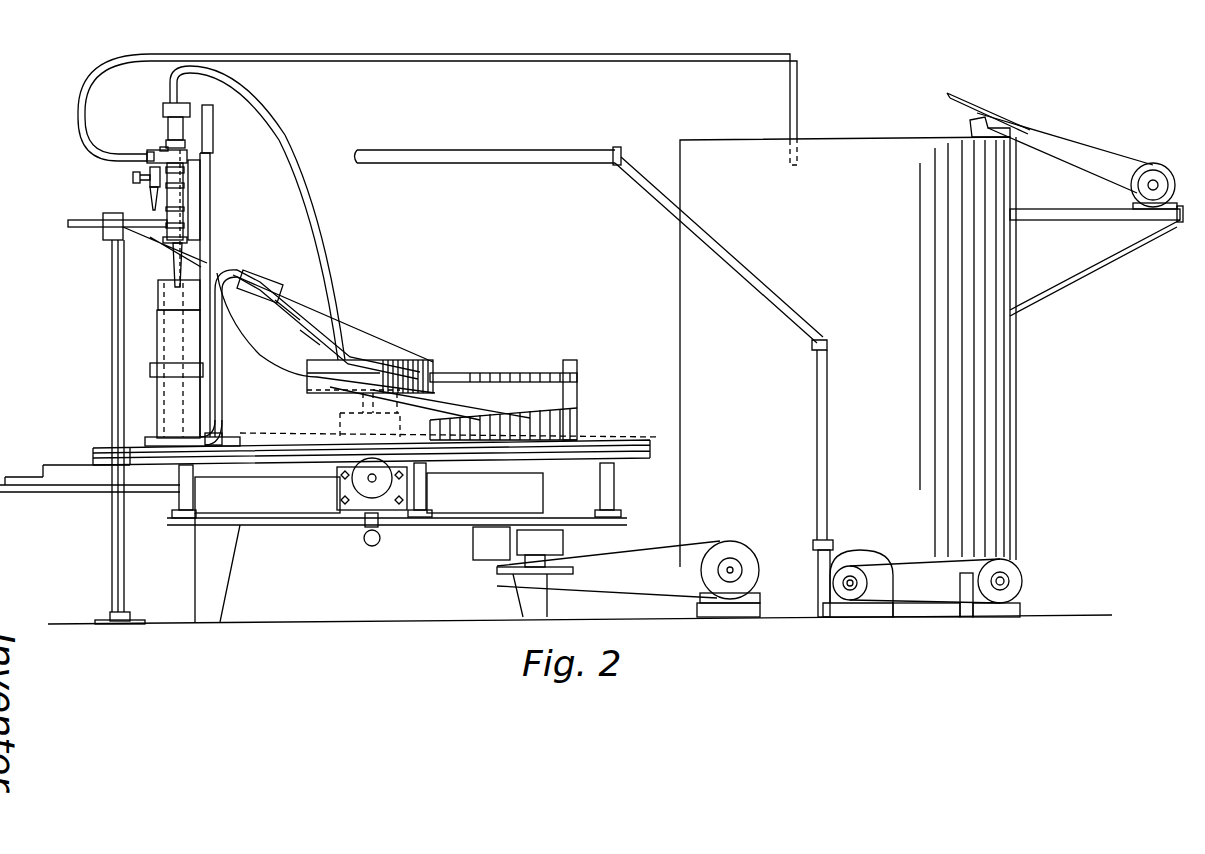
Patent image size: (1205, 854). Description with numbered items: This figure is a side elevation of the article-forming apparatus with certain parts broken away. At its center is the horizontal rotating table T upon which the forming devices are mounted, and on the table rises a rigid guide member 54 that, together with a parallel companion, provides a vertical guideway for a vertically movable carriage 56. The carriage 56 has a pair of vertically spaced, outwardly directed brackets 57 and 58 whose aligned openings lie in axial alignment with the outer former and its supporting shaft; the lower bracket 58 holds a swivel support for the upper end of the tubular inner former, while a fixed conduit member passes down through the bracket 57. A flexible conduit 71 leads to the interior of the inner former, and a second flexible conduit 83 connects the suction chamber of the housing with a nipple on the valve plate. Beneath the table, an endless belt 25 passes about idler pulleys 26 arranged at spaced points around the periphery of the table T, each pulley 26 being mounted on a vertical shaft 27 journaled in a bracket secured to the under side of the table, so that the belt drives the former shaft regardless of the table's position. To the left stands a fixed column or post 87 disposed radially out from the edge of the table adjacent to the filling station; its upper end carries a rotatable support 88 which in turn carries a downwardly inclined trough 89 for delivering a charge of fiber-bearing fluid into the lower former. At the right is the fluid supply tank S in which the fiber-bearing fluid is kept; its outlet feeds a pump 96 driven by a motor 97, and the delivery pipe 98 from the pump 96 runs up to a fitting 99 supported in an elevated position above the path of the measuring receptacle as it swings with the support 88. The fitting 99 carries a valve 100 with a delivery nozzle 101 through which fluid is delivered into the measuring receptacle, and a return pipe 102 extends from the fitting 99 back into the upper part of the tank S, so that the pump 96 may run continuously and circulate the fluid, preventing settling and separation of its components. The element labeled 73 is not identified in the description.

The return pipe 102 is at (80, 100).
The carriage 56 is at (213, 108).
The flexible conduit 71 is at (278, 140).
The bracket 57 is at (165, 104).
The fitting 99 is at (153, 150).
The bracket 58 is at (183, 155).
The valve 100 is at (133, 178).
The delivery nozzle 101 is at (149, 195).
The guide member 54 is at (215, 218).
The rotatable support 88 is at (93, 226).
The trough 89 is at (150, 234).
The post 87 is at (112, 582).
The flexible conduit 83 is at (300, 283).
The plate 73 is at (313, 367).
The rotating table T is at (626, 433).
The vertical shaft 27 is at (614, 482).
The idler pulley 26 is at (623, 524).
The endless belt 25 is at (278, 530).
The delivery pipe 98 is at (743, 270).
The supply tank S is at (1015, 386).
The pump 96 is at (826, 583).
The motor 97 is at (1022, 580).